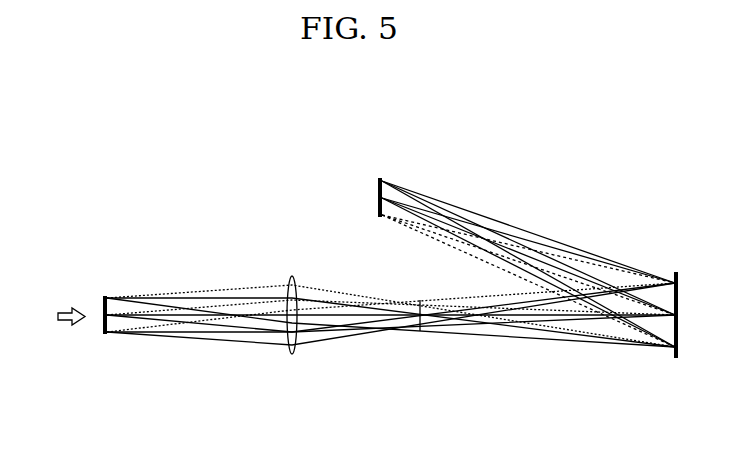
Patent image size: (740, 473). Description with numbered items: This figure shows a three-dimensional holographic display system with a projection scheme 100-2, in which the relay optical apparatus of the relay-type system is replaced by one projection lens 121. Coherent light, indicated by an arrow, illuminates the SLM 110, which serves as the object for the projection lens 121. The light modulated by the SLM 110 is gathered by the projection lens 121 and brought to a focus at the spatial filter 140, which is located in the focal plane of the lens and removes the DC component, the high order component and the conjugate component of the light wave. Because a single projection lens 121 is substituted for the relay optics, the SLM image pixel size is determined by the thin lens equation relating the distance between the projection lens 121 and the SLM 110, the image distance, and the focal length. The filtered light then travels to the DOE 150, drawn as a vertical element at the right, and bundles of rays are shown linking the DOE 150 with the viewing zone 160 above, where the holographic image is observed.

The 3D holographic display system with a projection scheme 100-2 is at (392, 128).
The SLM 110 is at (101, 299).
The projection lens 121 is at (291, 388).
The spatial filter 140 is at (417, 385).
The DOE 150 is at (678, 348).
The viewing zone 160 is at (378, 197).